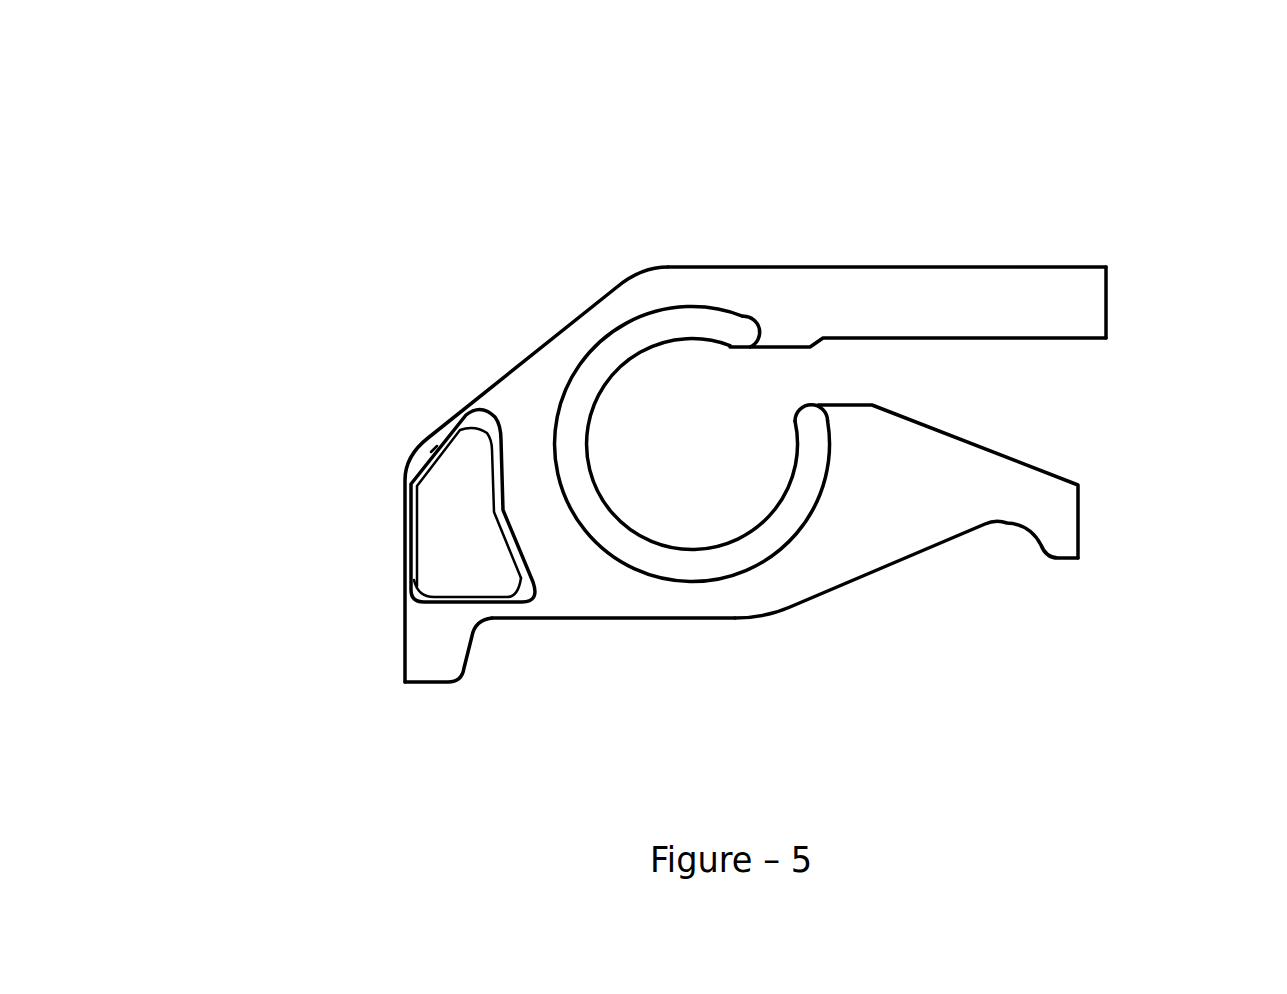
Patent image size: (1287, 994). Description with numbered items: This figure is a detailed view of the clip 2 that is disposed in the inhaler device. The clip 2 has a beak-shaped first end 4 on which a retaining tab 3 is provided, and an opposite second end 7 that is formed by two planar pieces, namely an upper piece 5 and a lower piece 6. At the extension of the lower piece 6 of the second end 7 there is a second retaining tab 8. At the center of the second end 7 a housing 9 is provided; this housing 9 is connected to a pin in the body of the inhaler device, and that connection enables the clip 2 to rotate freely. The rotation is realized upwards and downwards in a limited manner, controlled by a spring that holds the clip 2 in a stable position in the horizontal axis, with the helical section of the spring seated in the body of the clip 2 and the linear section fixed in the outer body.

The clip 2 is at (585, 213).
The retaining tab 3 is at (432, 670).
The beak-shaped first end 4 is at (318, 453).
The upper piece 5 is at (1062, 300).
The lower piece 6 is at (963, 452).
The second end 7 is at (1115, 247).
The second retaining tab 8 is at (1068, 553).
The housing 9 is at (702, 410).